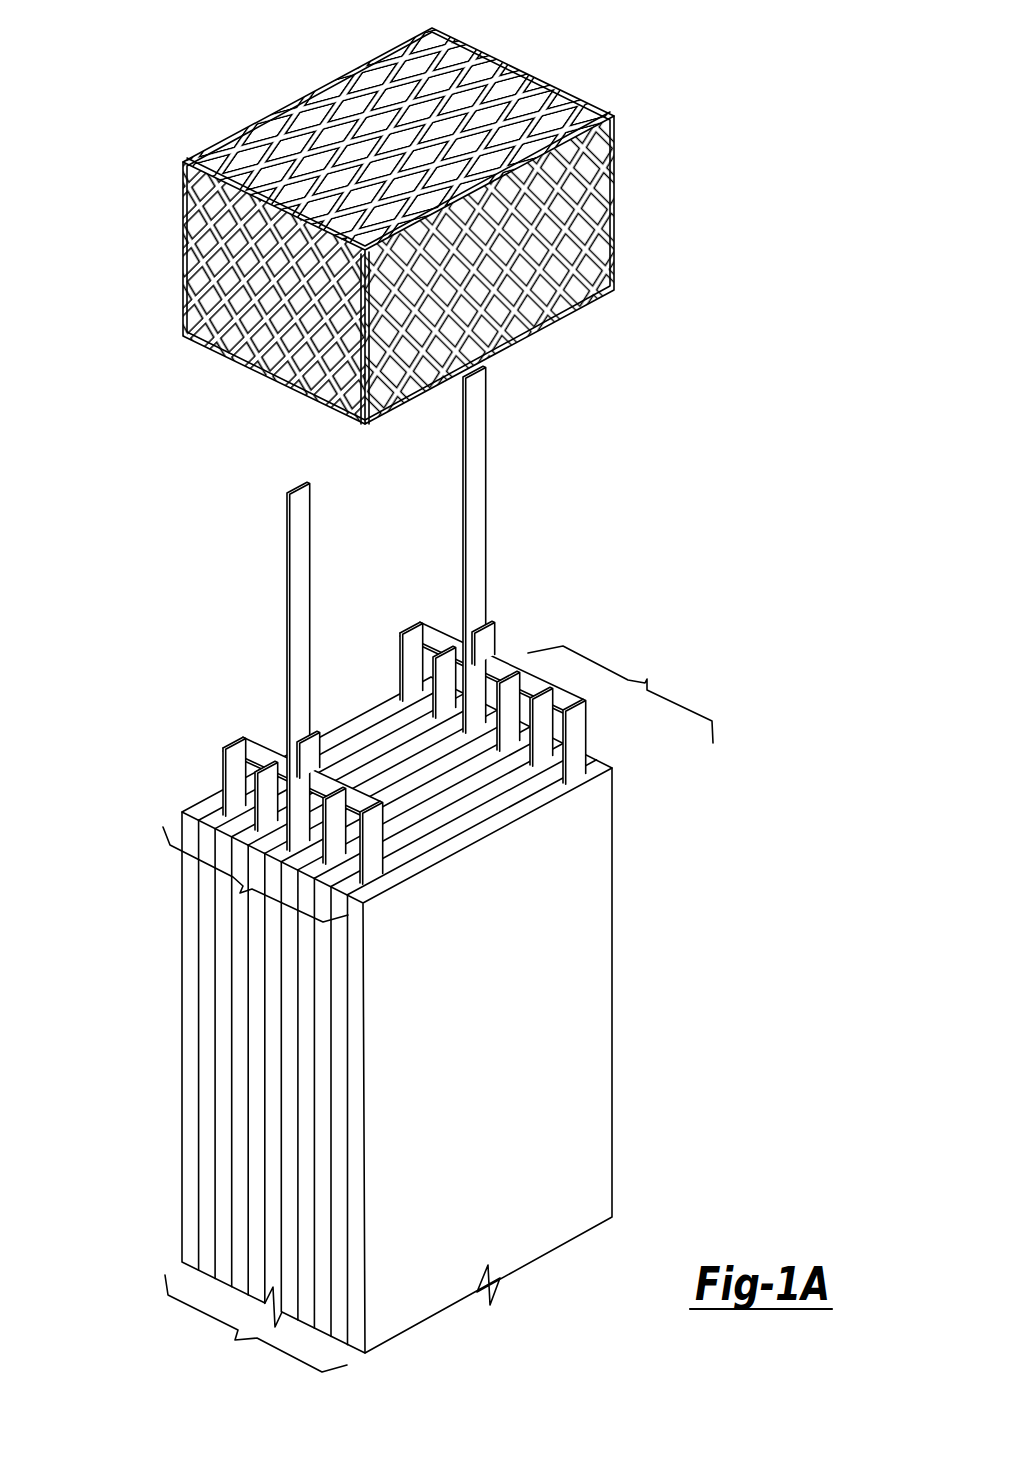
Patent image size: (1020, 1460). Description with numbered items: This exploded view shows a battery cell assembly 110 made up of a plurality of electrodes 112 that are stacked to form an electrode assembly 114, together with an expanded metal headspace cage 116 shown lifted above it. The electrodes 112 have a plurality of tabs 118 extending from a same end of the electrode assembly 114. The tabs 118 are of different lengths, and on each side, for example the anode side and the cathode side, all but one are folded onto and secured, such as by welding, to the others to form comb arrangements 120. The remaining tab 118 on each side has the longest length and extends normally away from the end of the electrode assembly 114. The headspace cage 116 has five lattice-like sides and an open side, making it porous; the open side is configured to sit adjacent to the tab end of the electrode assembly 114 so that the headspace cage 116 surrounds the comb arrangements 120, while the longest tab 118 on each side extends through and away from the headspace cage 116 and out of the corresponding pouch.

The battery cell assembly 110 is at (376, 692).
The electrodes 112 is at (340, 1063).
The electrode assembly 114 is at (256, 1324).
The headspace cage 116 is at (517, 67).
The tabs 118 is at (407, 672).
The comb arrangements 120 is at (438, 786).